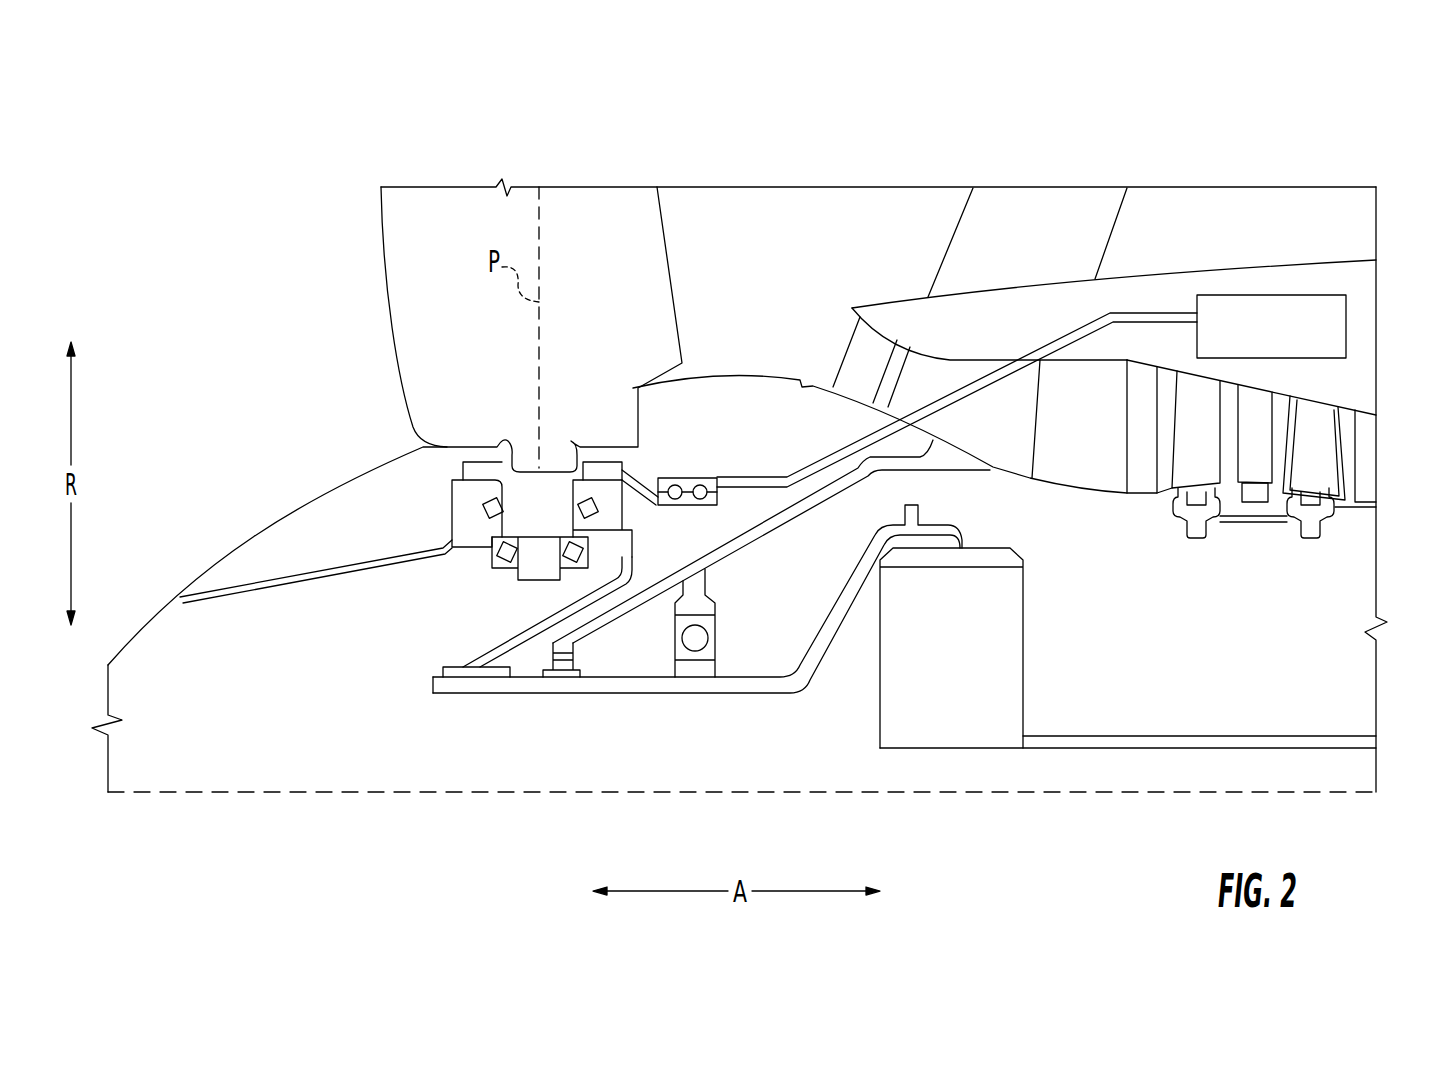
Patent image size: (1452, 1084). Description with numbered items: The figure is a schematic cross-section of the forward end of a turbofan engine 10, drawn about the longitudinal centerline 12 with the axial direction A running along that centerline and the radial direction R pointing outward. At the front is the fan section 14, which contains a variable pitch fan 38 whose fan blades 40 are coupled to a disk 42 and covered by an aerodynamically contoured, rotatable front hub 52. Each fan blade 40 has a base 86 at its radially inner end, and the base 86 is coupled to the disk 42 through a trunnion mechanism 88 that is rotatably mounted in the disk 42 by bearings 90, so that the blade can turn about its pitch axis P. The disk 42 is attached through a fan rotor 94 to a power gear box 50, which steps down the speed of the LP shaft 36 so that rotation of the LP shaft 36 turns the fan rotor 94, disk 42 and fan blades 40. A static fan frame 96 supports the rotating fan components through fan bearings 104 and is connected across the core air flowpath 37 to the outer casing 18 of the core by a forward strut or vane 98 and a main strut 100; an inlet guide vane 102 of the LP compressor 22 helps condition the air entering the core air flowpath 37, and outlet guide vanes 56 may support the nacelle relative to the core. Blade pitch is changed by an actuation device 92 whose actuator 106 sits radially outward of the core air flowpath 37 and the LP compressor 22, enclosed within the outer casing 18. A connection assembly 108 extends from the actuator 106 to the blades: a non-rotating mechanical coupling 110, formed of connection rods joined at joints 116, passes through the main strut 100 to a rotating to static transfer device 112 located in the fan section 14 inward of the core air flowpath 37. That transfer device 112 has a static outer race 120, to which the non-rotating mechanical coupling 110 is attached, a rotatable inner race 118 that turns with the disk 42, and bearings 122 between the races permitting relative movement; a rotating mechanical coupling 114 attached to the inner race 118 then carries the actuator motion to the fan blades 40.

The turbofan engine 10 is at (257, 168).
The longitudinal centerline 12 is at (297, 793).
The fan section 14 is at (810, 268).
The outer casing 18 is at (1253, 264).
The LP compressor 22 is at (1254, 558).
The LP shaft 36 is at (1128, 748).
The core air flowpath 37 is at (1095, 463).
The variable pitch fan 38 is at (461, 329).
The fan blades 40 is at (663, 270).
The disk 42 is at (452, 510).
The power gear box 50 is at (1027, 617).
The front hub 52 is at (205, 573).
The outlet guide vanes 56 is at (1123, 213).
The base 86 is at (582, 440).
The trunnion mechanism 88 is at (490, 545).
The bearings 90 is at (471, 518).
The actuation device 92 is at (1195, 289).
The fan rotor 94 is at (592, 693).
The fan frame 96 is at (773, 523).
The forward strut (vane) 98 is at (872, 353).
The main strut 100 is at (933, 380).
The inlet guide vane 102 is at (1133, 453).
The fan bearings 104 is at (745, 639).
The actuator 106 is at (1313, 295).
The connection assembly 108 is at (787, 415).
The non-rotating mechanical coupling 110 is at (995, 368).
The rotating to static transfer device 112 is at (693, 471).
The rotating mechanical coupling 114 is at (640, 477).
The joints 116 is at (788, 472).
The inner race 118 is at (672, 508).
The outer race 120 is at (710, 477).
The bearings 122 is at (700, 500).